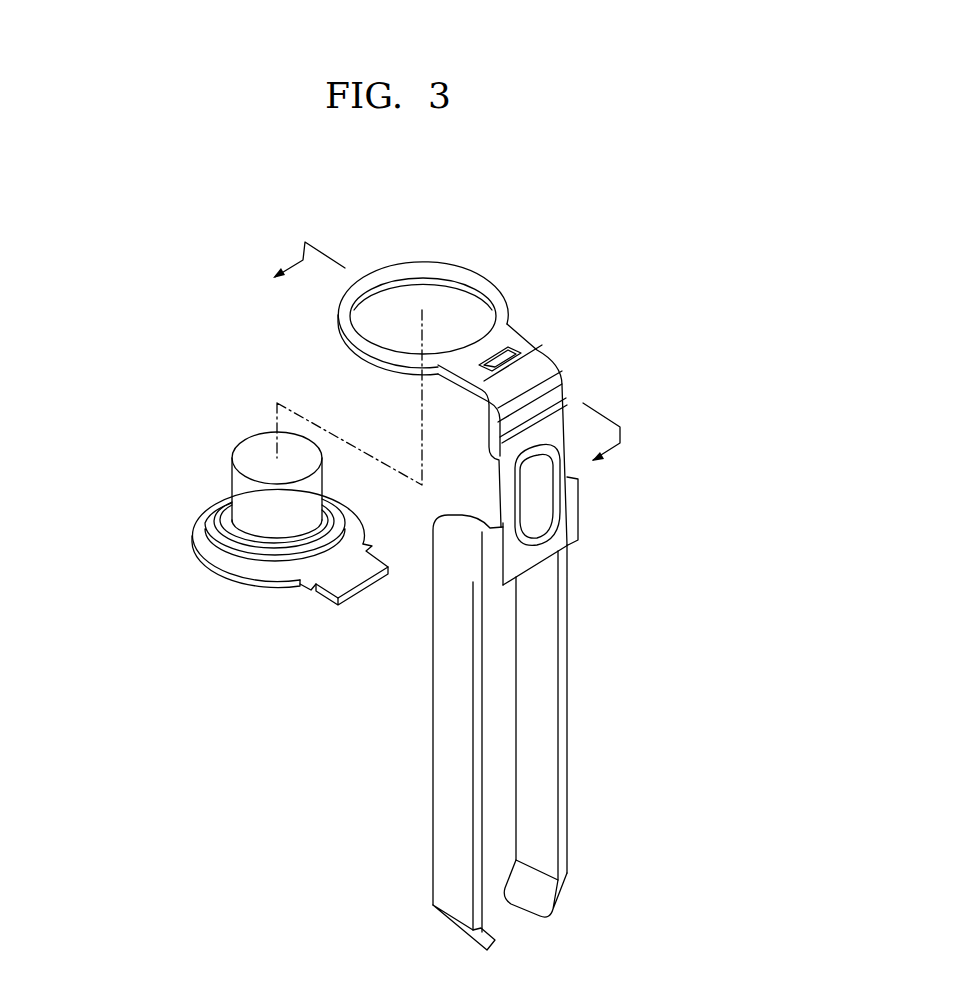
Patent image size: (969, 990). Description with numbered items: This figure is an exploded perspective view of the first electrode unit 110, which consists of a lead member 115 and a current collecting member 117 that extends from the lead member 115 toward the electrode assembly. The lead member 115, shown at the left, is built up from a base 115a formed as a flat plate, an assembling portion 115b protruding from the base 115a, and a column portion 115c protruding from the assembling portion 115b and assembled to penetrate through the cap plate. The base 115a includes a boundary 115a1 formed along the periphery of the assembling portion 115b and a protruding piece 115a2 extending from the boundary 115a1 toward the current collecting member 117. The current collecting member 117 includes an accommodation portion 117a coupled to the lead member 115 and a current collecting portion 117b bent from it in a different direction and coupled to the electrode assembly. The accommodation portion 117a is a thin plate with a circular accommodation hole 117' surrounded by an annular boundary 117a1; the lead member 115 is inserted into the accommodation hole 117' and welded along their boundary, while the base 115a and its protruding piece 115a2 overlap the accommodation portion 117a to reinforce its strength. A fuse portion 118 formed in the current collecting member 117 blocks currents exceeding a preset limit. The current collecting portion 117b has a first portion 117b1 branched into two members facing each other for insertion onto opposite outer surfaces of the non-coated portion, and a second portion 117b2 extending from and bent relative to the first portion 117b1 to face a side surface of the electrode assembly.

The first electrode unit 110 is at (222, 300).
The lead member 115 is at (192, 440).
The base 115a is at (192, 532).
The boundary 115a1 is at (207, 555).
The protruding piece 115a2 is at (355, 577).
The assembling portion 115b is at (208, 507).
The column portion 115c is at (240, 447).
The current collecting member 117 is at (535, 574).
The accommodation hole 117' is at (410, 283).
The accommodation portion 117a is at (518, 338).
The annular boundary 117a1 is at (490, 278).
The current collecting portion 117b is at (672, 472).
The first portion 117b1 is at (562, 602).
The second portion 117b2 is at (560, 463).
The fuse portion 118 is at (512, 354).